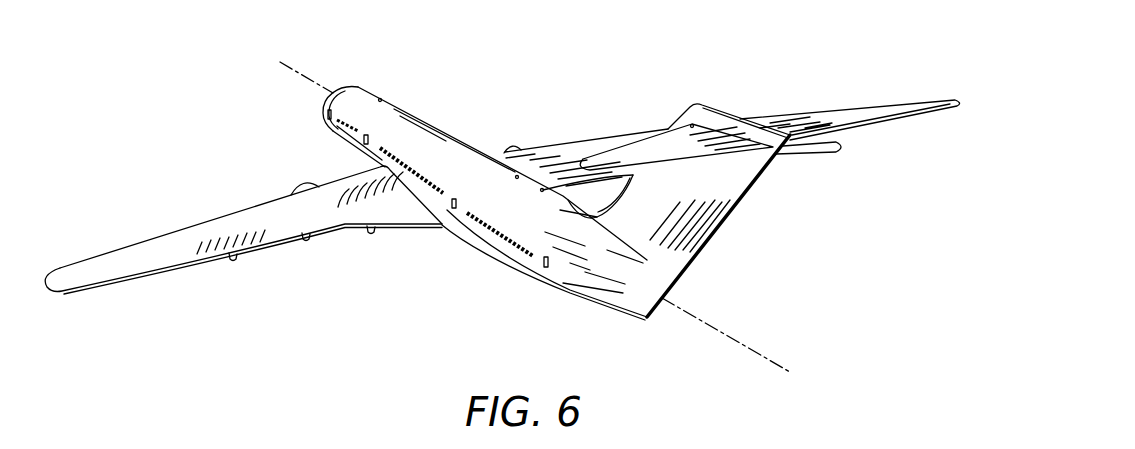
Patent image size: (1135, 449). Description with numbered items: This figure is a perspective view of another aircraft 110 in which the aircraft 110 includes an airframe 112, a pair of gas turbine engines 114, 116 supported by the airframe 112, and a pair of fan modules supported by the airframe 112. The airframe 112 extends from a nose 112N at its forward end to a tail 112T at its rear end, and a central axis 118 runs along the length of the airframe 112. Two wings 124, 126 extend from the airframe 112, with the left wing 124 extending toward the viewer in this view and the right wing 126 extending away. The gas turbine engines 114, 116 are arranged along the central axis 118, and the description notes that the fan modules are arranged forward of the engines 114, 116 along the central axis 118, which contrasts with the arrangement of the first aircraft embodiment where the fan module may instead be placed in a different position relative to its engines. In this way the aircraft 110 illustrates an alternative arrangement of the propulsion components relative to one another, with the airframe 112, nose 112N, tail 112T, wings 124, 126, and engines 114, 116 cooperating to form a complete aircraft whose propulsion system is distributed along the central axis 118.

The aircraft 110 is at (802, 70).
The airframe 112 is at (470, 180).
The nose of the airframe 112N is at (341, 82).
The tail of the airframe 112T is at (727, 294).
The gas turbine engine 114 is at (295, 176).
The gas turbine engine 116 is at (517, 137).
The central axis 118 is at (763, 330).
The wing 124 is at (279, 220).
The wing 126 is at (589, 143).